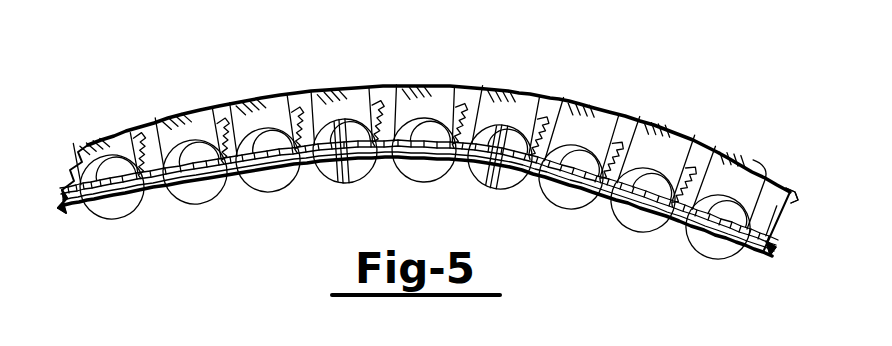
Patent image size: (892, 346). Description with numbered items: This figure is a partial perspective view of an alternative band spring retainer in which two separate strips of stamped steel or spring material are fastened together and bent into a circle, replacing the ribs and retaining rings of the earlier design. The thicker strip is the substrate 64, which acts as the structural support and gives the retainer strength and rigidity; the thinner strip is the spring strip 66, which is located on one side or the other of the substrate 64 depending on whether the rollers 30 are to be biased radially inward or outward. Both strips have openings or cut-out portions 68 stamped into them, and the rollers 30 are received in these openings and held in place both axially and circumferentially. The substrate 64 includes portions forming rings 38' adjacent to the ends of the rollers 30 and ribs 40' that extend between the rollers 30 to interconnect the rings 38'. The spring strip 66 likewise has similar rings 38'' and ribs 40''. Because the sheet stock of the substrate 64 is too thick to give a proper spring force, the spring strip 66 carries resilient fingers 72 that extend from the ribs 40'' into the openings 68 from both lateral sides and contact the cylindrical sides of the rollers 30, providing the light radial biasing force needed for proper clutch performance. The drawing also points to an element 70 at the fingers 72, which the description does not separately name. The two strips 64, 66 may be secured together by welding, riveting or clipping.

The roller 30 is at (120, 130).
The rings 38' is at (798, 261).
The rings 38'' is at (213, 229).
The ribs 40' is at (745, 224).
The ribs 40'' is at (160, 216).
The substrate 64 is at (60, 212).
The spring strip 66 is at (62, 200).
The cut-out portion 68 is at (77, 150).
The pin 70 is at (230, 140).
The resilient fingers 72 is at (140, 153).